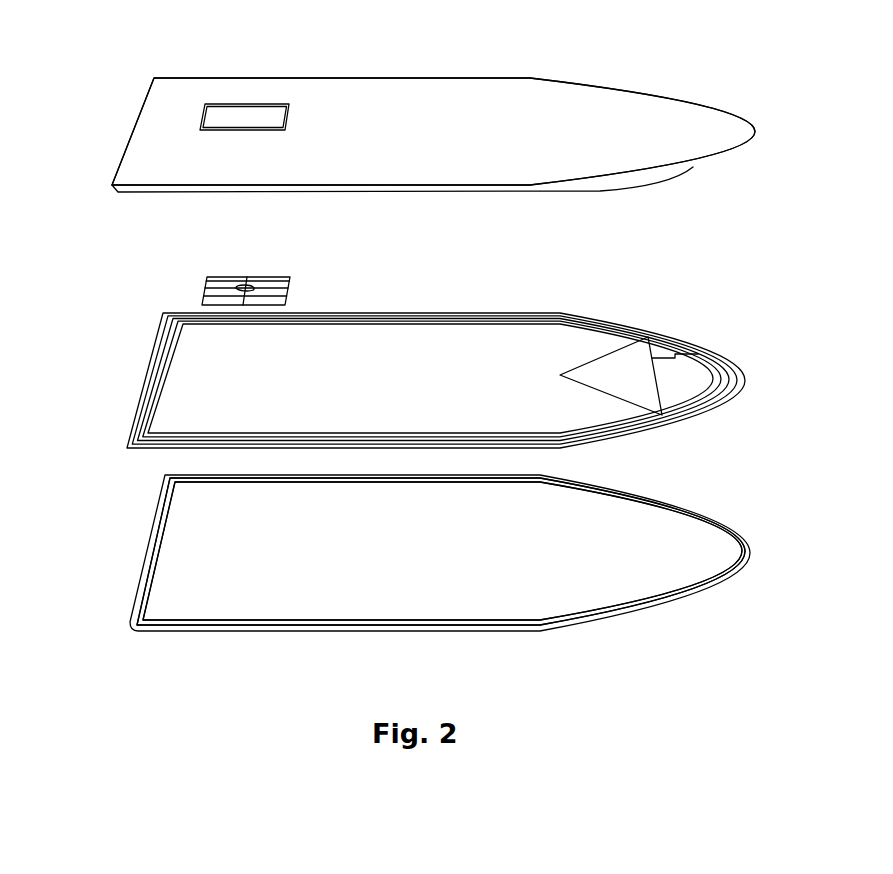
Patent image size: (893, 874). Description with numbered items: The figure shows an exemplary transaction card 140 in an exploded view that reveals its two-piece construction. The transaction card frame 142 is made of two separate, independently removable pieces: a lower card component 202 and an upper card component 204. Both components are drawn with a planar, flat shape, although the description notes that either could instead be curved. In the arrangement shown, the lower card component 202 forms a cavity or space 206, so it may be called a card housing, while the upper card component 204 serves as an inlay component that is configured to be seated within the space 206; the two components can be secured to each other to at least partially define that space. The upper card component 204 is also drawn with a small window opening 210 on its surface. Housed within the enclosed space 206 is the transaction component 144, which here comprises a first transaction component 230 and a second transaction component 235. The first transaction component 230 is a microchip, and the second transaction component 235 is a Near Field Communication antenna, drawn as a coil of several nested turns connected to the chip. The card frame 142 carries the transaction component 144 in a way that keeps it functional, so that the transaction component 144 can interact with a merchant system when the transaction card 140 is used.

The transaction card 140 is at (424, 30).
The transaction card frame 142 is at (677, 88).
The upper card component 204 is at (693, 167).
The window opening 210 is at (205, 120).
The transaction component 144 is at (134, 321).
The second transaction component 235 is at (643, 312).
The first transaction component 230 is at (290, 283).
The space 206 is at (176, 562).
The lower card component 202 is at (665, 617).